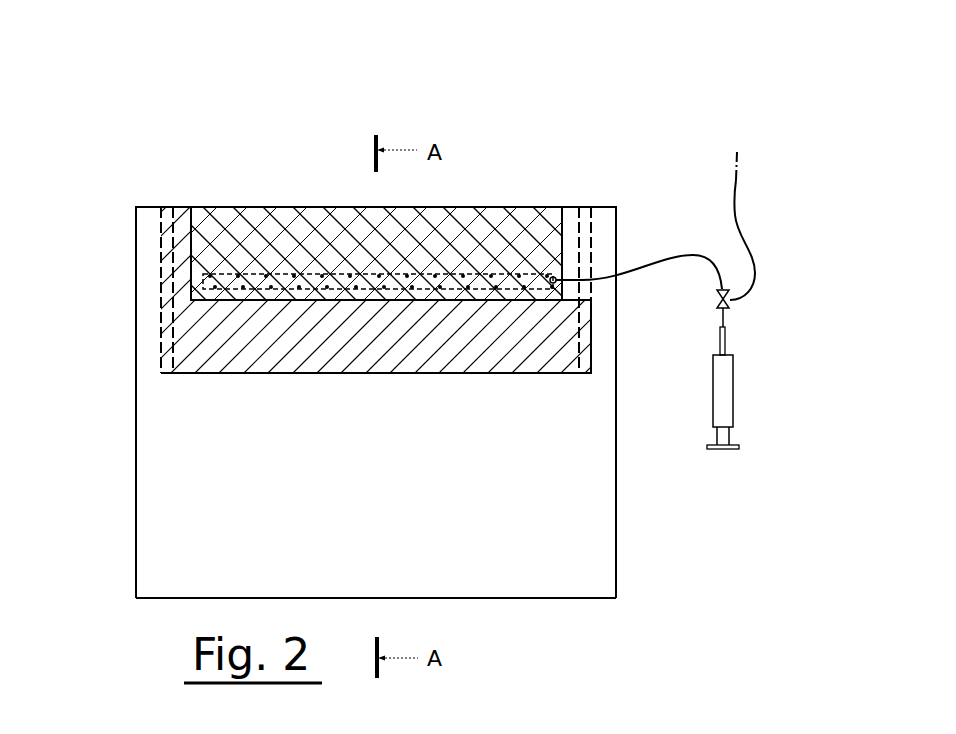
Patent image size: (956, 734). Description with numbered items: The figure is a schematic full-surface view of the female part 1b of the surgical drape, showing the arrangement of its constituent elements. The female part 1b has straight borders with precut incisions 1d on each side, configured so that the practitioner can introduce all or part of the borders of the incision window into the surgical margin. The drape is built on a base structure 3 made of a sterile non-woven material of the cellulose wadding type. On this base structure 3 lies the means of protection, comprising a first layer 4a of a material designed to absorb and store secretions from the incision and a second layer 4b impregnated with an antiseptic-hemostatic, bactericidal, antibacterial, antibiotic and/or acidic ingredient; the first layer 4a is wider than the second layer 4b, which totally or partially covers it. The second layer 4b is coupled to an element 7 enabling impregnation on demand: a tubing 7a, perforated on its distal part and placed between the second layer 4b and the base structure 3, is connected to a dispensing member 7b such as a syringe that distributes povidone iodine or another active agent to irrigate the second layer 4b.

The female part 1b is at (627, 577).
The incisions 1d is at (170, 257).
The base structure 3 is at (598, 482).
The first layer 4a is at (563, 348).
The second layer 4b is at (513, 207).
The element enabling impregnation 7 is at (175, 315).
The tubing 7a is at (280, 274).
The dispensing member 7b is at (731, 395).